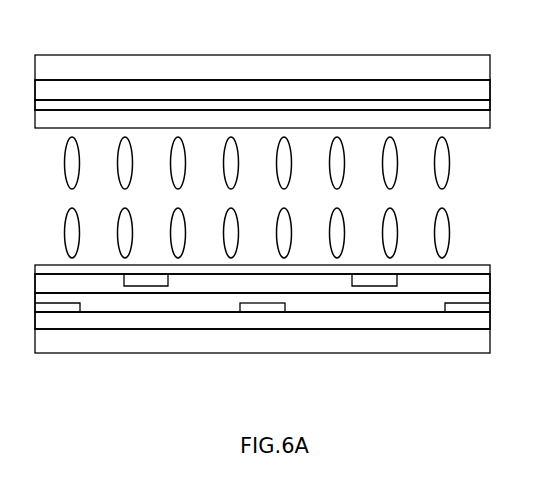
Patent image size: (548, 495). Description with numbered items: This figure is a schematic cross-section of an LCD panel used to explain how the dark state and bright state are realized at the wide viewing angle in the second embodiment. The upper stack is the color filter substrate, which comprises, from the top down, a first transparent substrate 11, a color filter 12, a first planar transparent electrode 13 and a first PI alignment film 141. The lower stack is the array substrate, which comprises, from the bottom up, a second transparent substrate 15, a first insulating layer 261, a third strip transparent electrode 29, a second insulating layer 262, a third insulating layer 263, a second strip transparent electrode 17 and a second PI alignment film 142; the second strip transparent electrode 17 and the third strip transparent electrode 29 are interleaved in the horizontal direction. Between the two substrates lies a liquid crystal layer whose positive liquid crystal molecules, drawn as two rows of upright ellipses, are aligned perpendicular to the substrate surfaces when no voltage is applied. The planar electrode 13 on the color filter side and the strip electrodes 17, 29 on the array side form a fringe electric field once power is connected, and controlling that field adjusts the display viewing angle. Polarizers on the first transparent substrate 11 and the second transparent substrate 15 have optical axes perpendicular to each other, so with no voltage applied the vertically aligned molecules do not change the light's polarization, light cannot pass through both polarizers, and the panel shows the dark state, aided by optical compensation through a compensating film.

The first transparent substrate 11 is at (197, 68).
The color filter 12 is at (283, 92).
The first planar transparent electrode 13 is at (337, 107).
The first PI alignment film 141 is at (393, 120).
The second PI alignment film 142 is at (420, 273).
The third insulating layer 263 is at (315, 285).
The second strip transparent electrode 17 is at (372, 280).
The second insulating layer 262 is at (165, 303).
The third strip transparent electrode 29 is at (253, 310).
The first insulating layer 261 is at (103, 320).
The second transparent substrate 15 is at (68, 340).